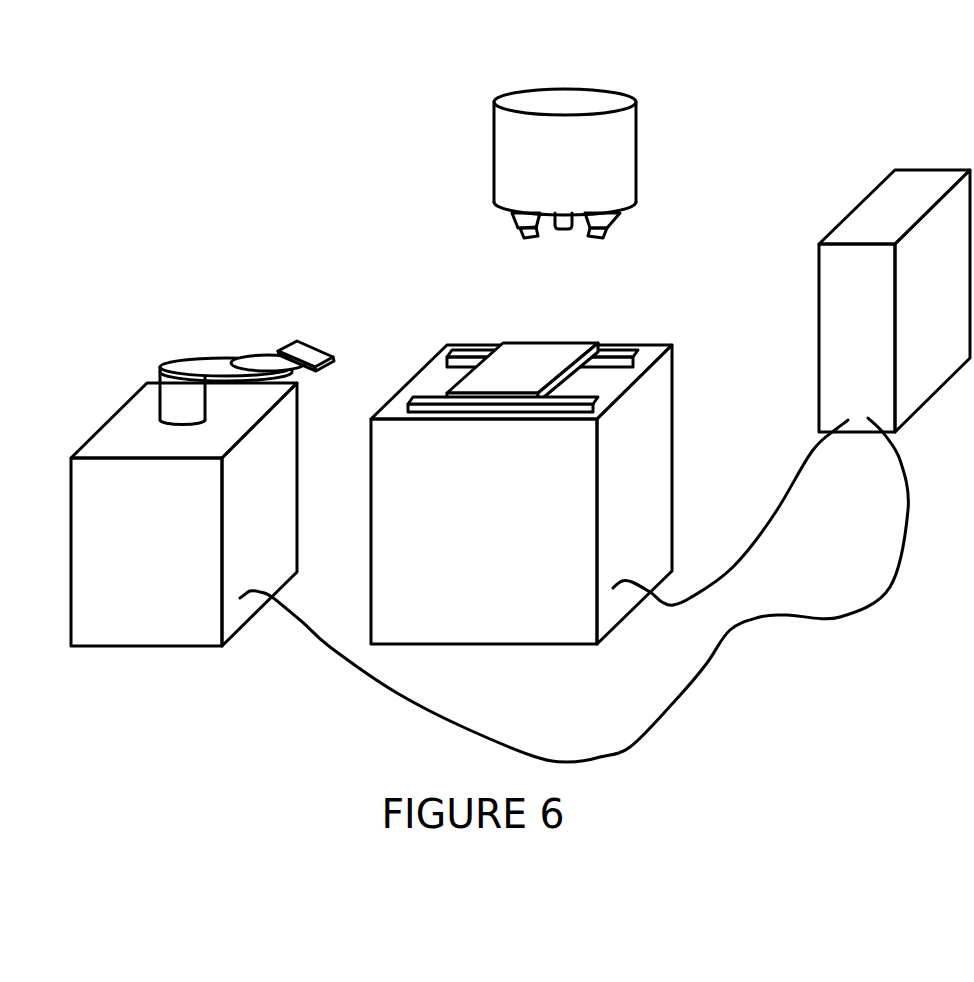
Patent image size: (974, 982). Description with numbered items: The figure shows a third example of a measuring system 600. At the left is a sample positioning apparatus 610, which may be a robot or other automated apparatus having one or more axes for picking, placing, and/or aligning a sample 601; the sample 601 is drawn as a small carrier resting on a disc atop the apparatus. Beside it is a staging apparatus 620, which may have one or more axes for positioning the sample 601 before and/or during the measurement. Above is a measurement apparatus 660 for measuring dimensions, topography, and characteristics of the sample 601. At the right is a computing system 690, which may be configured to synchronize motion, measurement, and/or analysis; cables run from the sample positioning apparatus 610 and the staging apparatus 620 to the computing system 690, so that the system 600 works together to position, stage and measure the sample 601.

The measuring system 600 is at (278, 114).
The sample positioning apparatus 610 is at (128, 420).
The sample 601 is at (317, 350).
The staging apparatus 620 is at (672, 413).
The measurement apparatus 660 is at (632, 188).
The computing system 690 is at (860, 208).